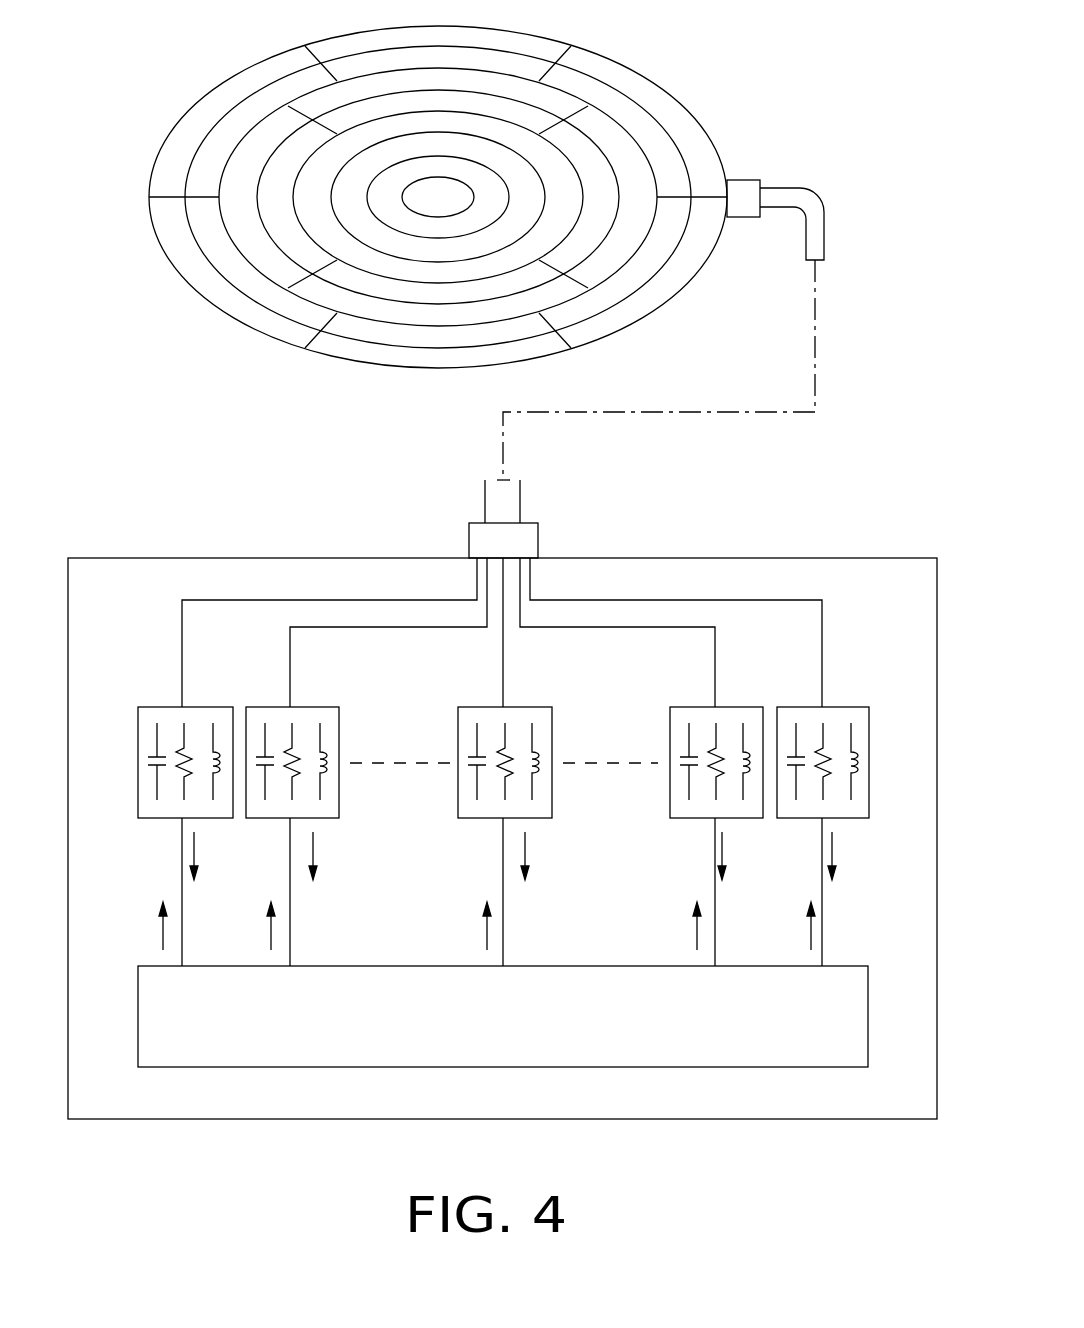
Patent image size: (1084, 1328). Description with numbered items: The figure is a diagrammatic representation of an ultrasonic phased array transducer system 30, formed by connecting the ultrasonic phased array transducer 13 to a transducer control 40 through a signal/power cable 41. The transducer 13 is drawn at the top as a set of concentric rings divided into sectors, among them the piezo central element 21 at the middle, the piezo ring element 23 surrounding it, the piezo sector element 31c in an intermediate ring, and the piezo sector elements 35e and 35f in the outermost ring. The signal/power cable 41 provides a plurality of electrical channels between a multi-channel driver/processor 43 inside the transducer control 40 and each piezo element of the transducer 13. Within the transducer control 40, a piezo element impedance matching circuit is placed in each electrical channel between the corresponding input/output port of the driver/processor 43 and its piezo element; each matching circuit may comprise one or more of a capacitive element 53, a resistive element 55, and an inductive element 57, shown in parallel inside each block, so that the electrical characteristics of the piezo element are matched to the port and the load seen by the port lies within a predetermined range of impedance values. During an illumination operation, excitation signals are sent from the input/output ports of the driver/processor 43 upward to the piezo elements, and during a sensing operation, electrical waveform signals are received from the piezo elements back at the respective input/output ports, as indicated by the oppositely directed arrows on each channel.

The ultrasonic phased array transducer 13 is at (448, 211).
The piezo central element 21 is at (452, 210).
The piezo ring element 23 is at (398, 210).
The piezo sector element 31c is at (238, 178).
The piezo sector element 35e is at (443, 358).
The piezo sector element 35f is at (665, 283).
The signal/power cable 41 is at (520, 506).
The transducer control 40 is at (130, 558).
The ultrasonic phased array transducer system 30 is at (503, 838).
The multi-channel driver/processor 43 is at (298, 1067).
The capacitive element 53 is at (157, 742).
The resistive element 55 is at (184, 790).
The inductive element 57 is at (229, 737).